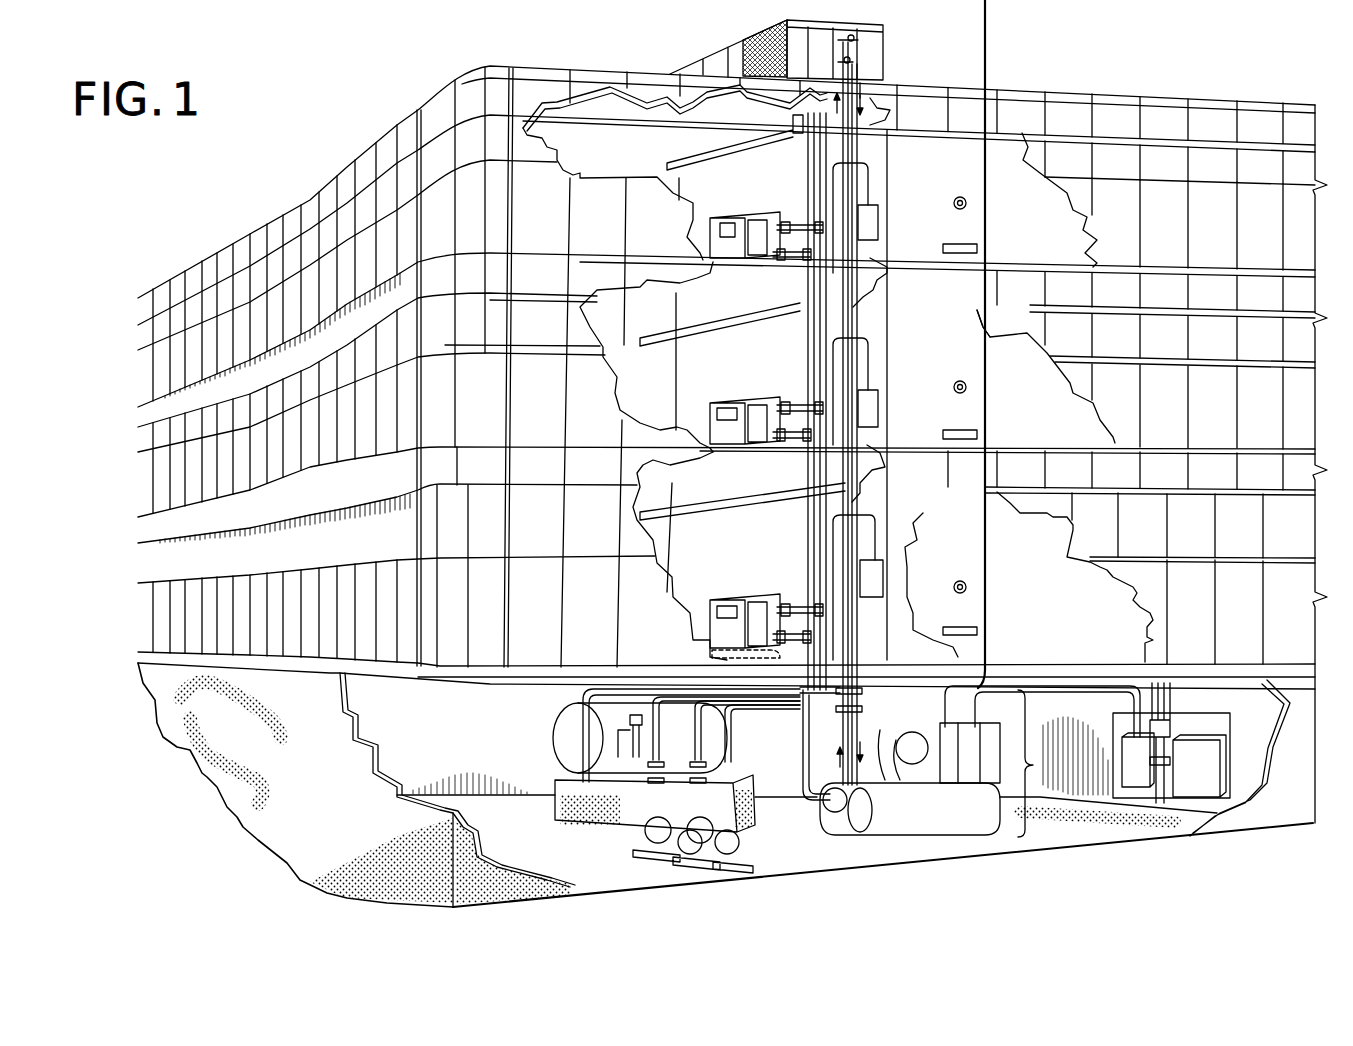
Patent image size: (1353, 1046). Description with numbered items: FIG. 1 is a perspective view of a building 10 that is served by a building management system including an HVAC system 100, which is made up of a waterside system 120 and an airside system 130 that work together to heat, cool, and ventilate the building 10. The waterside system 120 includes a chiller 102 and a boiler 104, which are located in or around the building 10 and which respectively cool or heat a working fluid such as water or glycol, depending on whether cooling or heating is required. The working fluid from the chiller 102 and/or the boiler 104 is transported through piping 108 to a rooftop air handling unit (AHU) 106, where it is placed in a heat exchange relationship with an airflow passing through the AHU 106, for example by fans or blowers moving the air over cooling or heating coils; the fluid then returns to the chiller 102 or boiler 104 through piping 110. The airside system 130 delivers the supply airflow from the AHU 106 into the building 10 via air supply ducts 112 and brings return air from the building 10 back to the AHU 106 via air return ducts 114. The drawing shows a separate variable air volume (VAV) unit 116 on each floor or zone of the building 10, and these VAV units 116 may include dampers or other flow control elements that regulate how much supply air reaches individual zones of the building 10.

The building 10 is at (295, 120).
The HVAC system 100 is at (1040, 855).
The chiller 102 is at (935, 810).
The boiler 104 is at (568, 737).
The rooftop air handling unit (AHU) 106 is at (878, 70).
The piping 108 is at (808, 52).
The piping 110 is at (860, 48).
The air supply ducts 112 is at (813, 143).
The air return ducts 114 is at (717, 267).
The variable air volume (VAV) units 116 is at (765, 232).
The waterside system 120 is at (1028, 765).
The airside system 130 is at (992, 337).